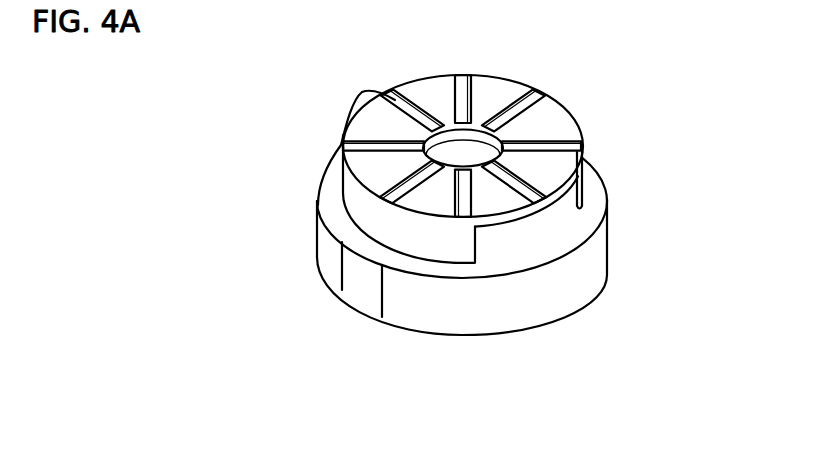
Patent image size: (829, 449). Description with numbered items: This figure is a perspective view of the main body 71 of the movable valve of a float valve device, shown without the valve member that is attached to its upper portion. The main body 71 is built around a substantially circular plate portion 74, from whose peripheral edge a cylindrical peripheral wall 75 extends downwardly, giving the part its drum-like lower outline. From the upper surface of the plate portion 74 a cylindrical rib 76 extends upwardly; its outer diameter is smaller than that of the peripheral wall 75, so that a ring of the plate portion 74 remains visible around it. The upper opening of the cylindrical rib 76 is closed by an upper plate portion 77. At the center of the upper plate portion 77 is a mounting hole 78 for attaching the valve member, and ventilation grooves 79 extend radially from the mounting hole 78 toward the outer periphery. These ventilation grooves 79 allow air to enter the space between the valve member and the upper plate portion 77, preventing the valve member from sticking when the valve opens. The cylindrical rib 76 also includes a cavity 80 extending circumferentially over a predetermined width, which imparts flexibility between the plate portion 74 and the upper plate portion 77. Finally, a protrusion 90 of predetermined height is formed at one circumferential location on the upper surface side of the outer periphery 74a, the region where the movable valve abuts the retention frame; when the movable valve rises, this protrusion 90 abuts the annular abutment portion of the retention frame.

The main body 71 is at (303, 165).
The plate portion 74 is at (537, 240).
The outer periphery 74a is at (368, 243).
The peripheral wall 75 is at (540, 303).
The cylindrical rib 76 is at (457, 250).
The upper plate portion 77 is at (498, 90).
The mounting hole 78 is at (503, 136).
The ventilation grooves 79 is at (409, 105).
The cavity 80 is at (578, 207).
The protrusion 90 is at (358, 94).